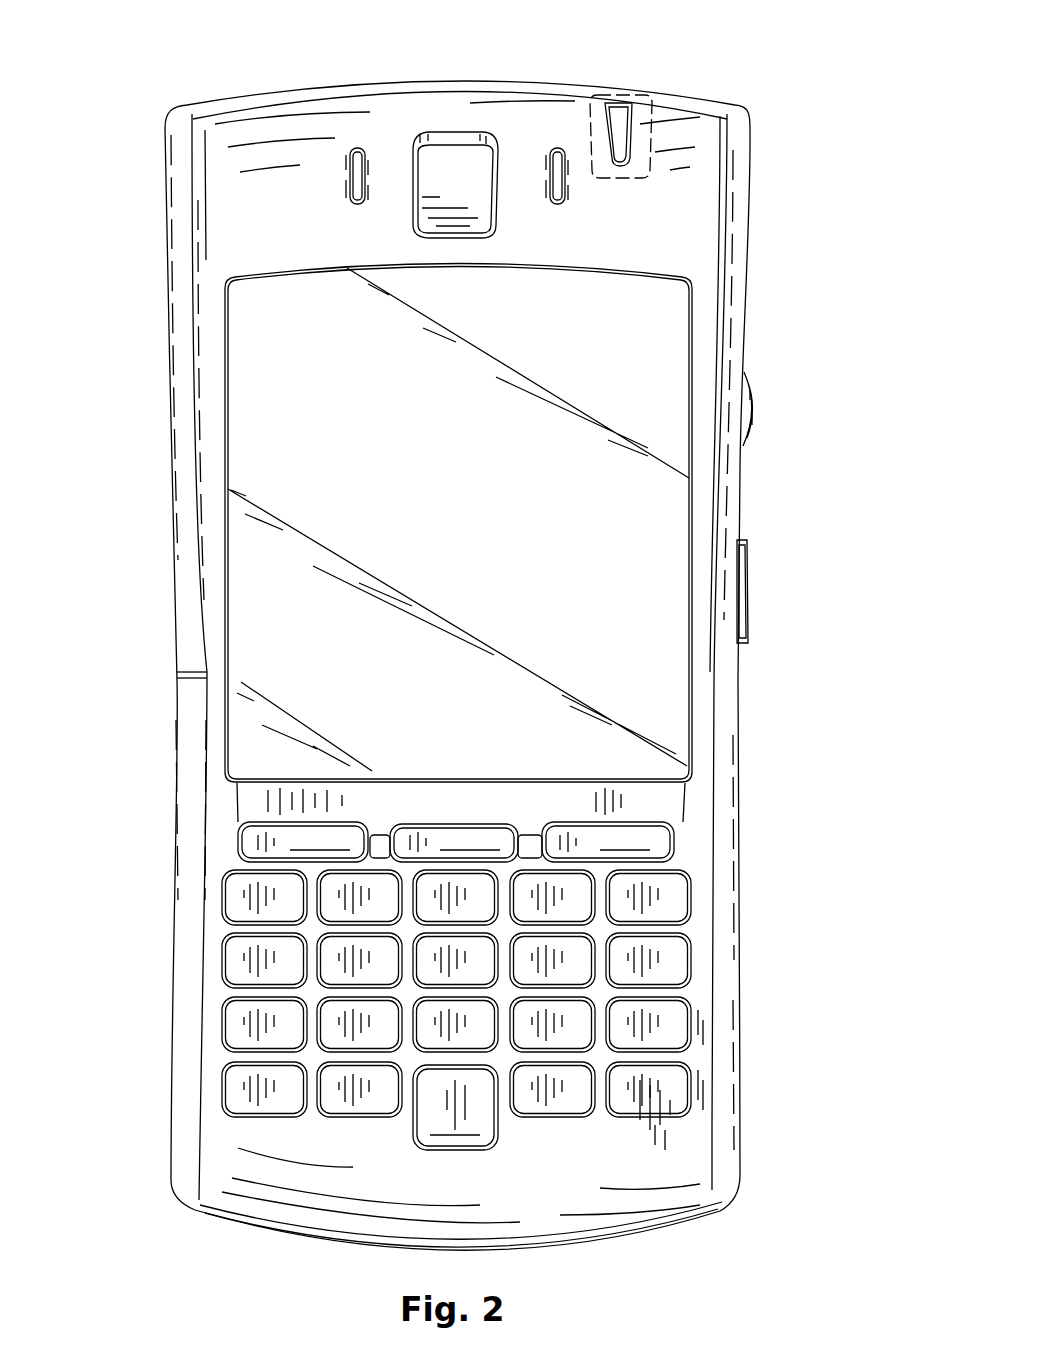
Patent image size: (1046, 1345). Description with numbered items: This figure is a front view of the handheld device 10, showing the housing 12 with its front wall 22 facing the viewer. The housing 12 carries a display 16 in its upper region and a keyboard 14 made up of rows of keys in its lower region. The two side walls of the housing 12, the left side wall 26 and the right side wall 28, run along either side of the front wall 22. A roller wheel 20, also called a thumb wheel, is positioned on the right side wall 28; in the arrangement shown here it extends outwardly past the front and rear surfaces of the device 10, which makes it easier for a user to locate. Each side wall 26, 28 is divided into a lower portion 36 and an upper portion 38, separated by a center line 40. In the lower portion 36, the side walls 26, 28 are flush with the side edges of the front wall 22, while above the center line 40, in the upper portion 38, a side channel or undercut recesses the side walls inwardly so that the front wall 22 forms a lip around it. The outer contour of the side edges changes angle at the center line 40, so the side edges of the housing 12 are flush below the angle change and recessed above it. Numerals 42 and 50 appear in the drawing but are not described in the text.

The device 10 is at (768, 105).
The housing 12 is at (670, 117).
The keyboard 14 is at (655, 898).
The display 16 is at (620, 533).
The roller wheel 20 is at (752, 398).
The front wall 22 is at (630, 217).
The left side wall 26 is at (177, 677).
The right side wall 28 is at (742, 722).
The lower portion 36 is at (155, 1167).
The upper portion 38 is at (155, 175).
The center line 40 is at (177, 672).
The top edge 42 is at (497, 82).
The function key 50 is at (692, 833).